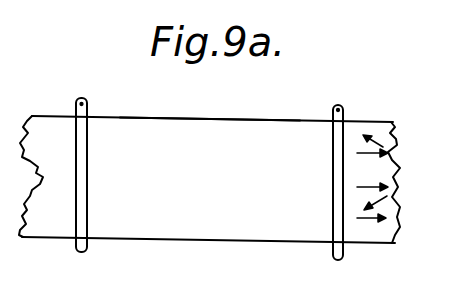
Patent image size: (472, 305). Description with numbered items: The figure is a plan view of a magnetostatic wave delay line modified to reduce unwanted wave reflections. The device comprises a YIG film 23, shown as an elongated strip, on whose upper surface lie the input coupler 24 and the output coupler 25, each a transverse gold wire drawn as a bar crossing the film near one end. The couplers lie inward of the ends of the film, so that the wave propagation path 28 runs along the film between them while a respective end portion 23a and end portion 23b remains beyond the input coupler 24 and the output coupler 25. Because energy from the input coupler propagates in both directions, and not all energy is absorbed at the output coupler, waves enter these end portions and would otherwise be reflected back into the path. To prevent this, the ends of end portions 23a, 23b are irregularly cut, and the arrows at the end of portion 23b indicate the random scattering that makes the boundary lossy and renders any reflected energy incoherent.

The YIG film 23 is at (265, 123).
The end portion 23a is at (60, 228).
The end portion 23b is at (380, 232).
The input coupler 24 is at (112, 76).
The output coupler 25 is at (343, 112).
The wave propagation path 28 is at (172, 128).